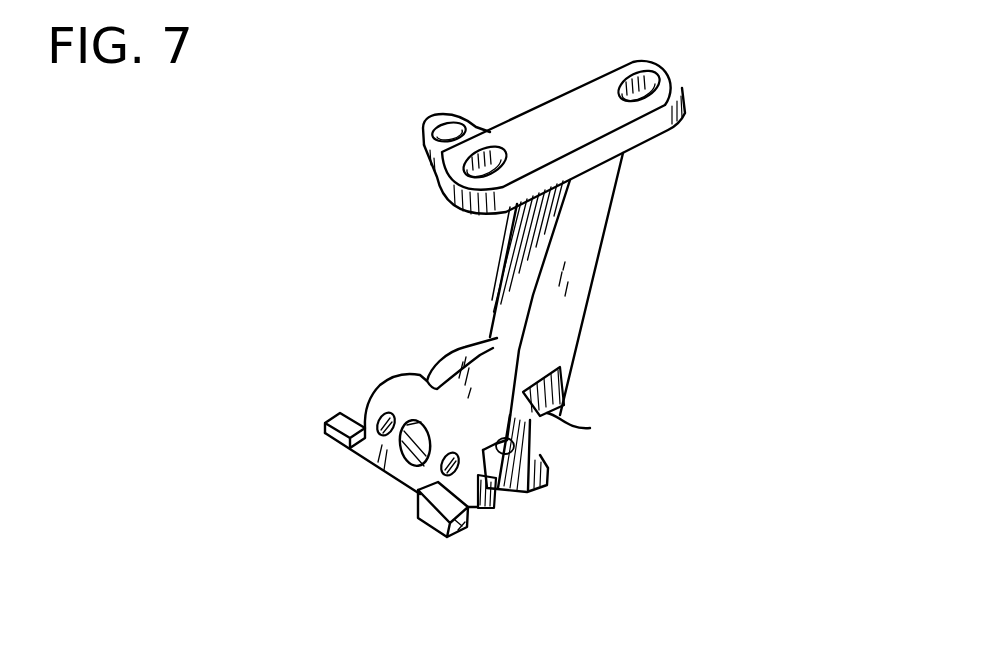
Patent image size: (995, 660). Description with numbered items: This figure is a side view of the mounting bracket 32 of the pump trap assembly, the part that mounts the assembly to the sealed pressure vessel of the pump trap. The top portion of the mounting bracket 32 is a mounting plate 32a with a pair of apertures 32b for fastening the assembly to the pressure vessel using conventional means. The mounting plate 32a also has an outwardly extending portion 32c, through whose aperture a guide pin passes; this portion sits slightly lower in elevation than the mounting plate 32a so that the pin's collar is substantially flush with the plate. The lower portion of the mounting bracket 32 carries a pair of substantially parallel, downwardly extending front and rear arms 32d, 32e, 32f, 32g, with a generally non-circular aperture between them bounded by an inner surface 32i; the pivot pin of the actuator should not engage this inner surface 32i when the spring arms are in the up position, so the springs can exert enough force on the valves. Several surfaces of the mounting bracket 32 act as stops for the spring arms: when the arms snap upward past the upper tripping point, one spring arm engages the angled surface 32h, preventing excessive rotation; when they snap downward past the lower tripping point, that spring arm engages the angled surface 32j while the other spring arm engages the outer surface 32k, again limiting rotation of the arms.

The mounting bracket 32 is at (632, 245).
The mounting plate 32a is at (640, 128).
The apertures 32b is at (648, 73).
The outwardly extending portion 32c is at (428, 127).
The front arm 32d is at (468, 475).
The rear arm 32e is at (386, 394).
The front arm 32f is at (545, 478).
The rear arm 32g is at (437, 372).
The angled surface 32h is at (490, 464).
The inner surface 32i is at (421, 446).
The angled surface 32j is at (452, 515).
The outer surface 32k is at (336, 420).